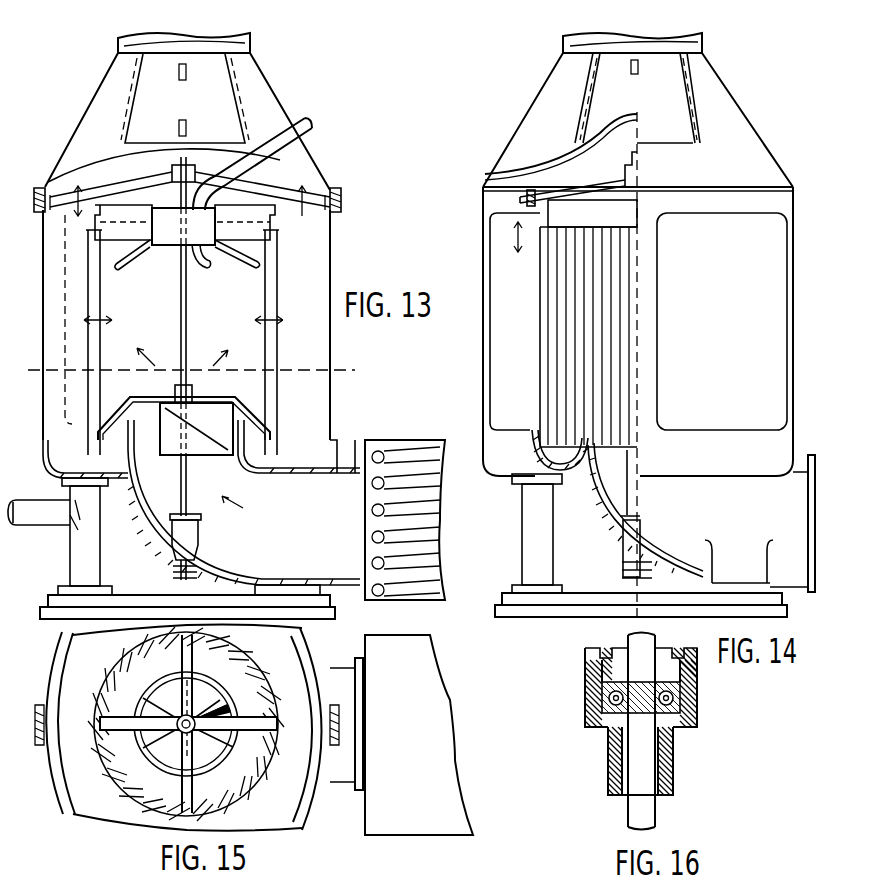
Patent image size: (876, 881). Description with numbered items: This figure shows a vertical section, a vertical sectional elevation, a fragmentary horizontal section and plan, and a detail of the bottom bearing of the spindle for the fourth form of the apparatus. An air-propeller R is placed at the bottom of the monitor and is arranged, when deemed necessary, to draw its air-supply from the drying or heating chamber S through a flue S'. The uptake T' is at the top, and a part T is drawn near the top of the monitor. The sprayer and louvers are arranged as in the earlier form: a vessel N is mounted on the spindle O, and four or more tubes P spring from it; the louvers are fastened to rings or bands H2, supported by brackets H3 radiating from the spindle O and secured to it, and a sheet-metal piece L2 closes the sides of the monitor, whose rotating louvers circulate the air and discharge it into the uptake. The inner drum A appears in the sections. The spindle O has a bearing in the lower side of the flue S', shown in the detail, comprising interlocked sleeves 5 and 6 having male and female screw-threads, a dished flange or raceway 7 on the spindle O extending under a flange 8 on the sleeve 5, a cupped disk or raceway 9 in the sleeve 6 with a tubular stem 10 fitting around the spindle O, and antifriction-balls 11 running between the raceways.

In FIG. 13, the uptake T' is at (173, 31).
In FIG. 14, the hood plate T is at (561, 150).
In FIG. 13, the vessel N is at (183, 226).
In FIG. 13, the rings or bands H2 is at (274, 232).
In FIG. 14, the rings or bands H2 is at (556, 216).
In FIG. 13, the brackets H3 is at (240, 230).
In FIG. 13, the tubes P is at (232, 254).
In FIG. 13, the inner cylinder A is at (278, 290).
In FIG. 14, the inner cylinder A is at (548, 331).
In FIG. 15, the inner cylinder A is at (282, 706).
In FIG. 13, the spindle O is at (185, 333).
In FIG. 16, the spindle O is at (647, 646).
In FIG. 13, the sheet-metal piece L2 is at (332, 340).
In FIG. 14, the sheet-metal piece L2 is at (638, 331).
In FIG. 15, the sheet-metal piece L2 is at (58, 668).
In FIG. 13, the air-propeller R is at (196, 429).
In FIG. 15, the air-propeller R is at (158, 714).
In FIG. 13, the flue S' is at (201, 502).
In FIG. 14, the flue S' is at (760, 523).
In FIG. 15, the flue S' is at (346, 739).
In FIG. 13, the drying or heating chamber S is at (390, 520).
In FIG. 15, the drying or heating chamber S is at (419, 735).
In FIG. 13, the sleeve 5 is at (198, 518).
In FIG. 16, the sleeve 5 is at (688, 654).
In FIG. 13, the sleeve 6 is at (196, 543).
In FIG. 14, the sleeve 6 is at (624, 552).
In FIG. 16, the sleeve 6 is at (672, 772).
In FIG. 16, the dished flange or raceway 7 is at (694, 688).
In FIG. 16, the flange 8 is at (614, 674).
In FIG. 16, the cupped disk or raceway 9 is at (688, 735).
In FIG. 16, the tubular stem 10 is at (608, 784).
In FIG. 16, the antifriction-balls 11 is at (600, 726).